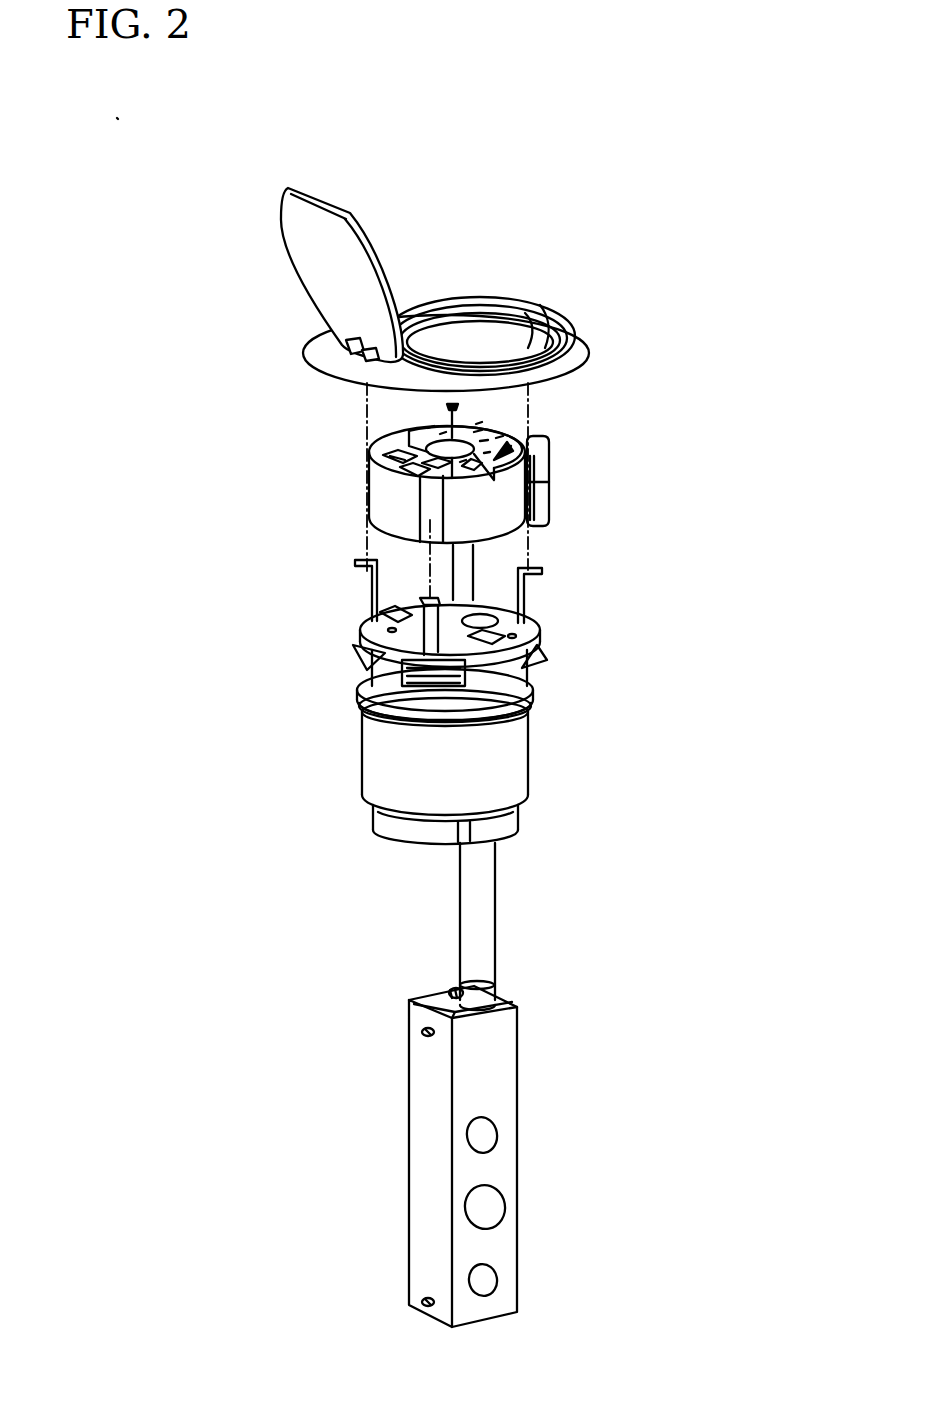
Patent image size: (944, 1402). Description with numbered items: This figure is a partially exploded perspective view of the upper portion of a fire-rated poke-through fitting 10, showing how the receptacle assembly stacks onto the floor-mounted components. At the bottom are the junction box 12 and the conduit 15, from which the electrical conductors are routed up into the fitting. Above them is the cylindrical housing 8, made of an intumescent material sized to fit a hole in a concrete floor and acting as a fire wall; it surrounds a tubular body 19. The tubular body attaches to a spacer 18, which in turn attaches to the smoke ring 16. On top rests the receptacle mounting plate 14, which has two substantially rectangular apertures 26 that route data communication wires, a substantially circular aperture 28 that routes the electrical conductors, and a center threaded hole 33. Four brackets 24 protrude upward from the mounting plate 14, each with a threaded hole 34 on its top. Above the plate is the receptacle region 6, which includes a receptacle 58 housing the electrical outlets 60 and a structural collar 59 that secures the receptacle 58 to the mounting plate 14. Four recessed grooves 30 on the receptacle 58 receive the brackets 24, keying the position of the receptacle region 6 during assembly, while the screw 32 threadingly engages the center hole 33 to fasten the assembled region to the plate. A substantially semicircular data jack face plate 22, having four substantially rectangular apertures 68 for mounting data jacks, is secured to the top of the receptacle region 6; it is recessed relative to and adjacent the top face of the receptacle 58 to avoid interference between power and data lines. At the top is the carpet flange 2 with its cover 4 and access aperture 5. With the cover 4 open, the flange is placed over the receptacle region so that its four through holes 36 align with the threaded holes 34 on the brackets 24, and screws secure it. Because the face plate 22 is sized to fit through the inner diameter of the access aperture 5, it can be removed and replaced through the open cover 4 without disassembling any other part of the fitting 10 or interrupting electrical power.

The poke-through fitting 10 is at (222, 170).
The carpet flange 2 is at (575, 338).
The cover 4 is at (378, 247).
The access aperture 5 is at (500, 340).
The through holes 36 is at (460, 312).
The screw 32 is at (460, 418).
The data jack face plate 22 is at (408, 437).
The receptacle 58 is at (490, 428).
The rectangular apertures 68 is at (385, 440).
The electrical outlets 60 is at (543, 436).
The receptacle region 6 is at (553, 485).
The structural collar 59 is at (548, 494).
The recessed grooves 30 is at (432, 510).
The threaded holes 34 is at (355, 560).
The brackets 24 is at (386, 626).
The circular aperture 28 is at (505, 588).
The receptacle mounting plate 14 is at (440, 624).
The center threaded hole 33 is at (363, 653).
The rectangular apertures 26 is at (525, 620).
The smoke ring 16 is at (365, 670).
The spacer 18 is at (533, 687).
The cylindrical housing 8 is at (512, 755).
The tubular body 19 is at (513, 823).
The conduit 15 is at (470, 910).
The junction box 12 is at (430, 1102).